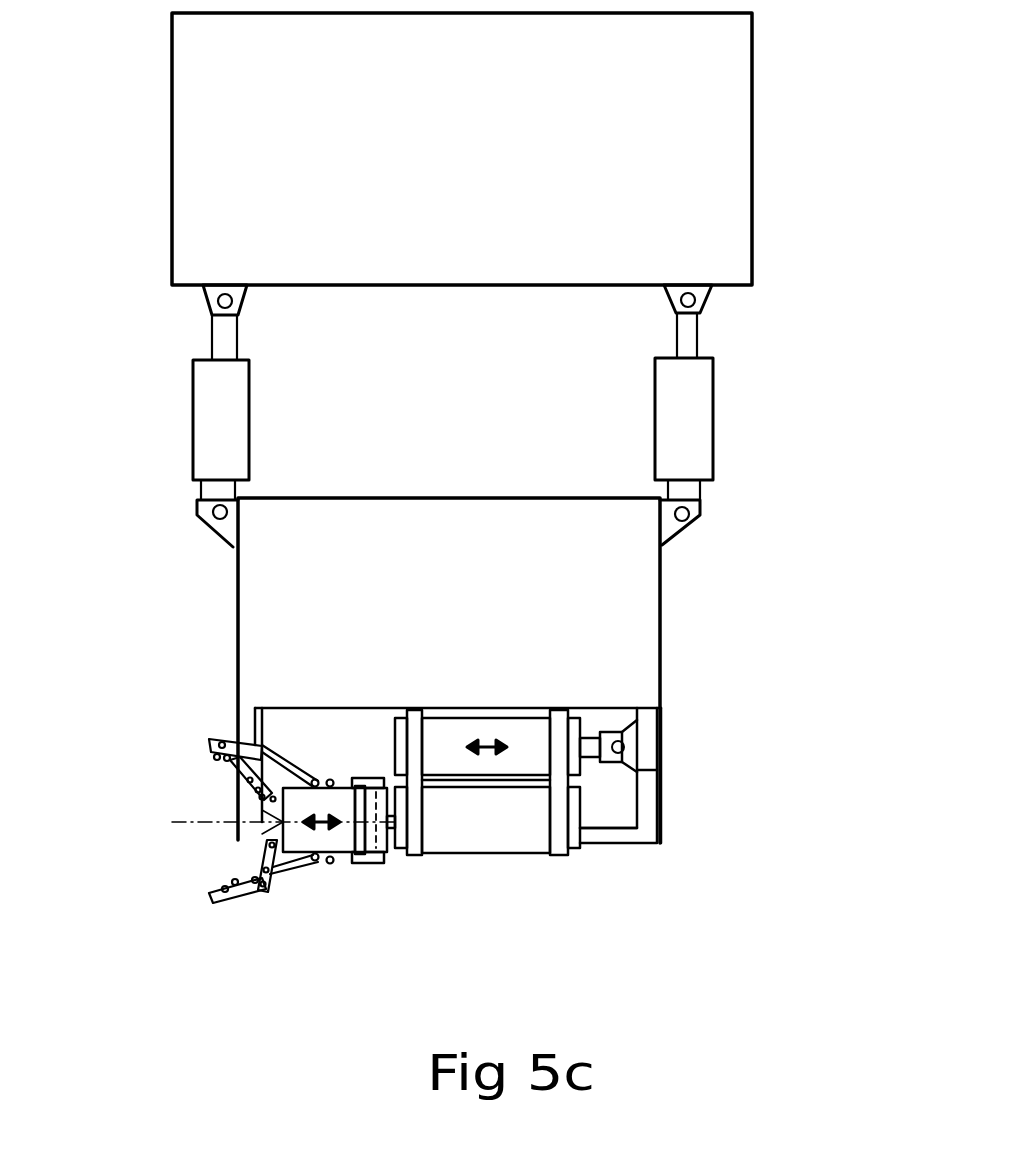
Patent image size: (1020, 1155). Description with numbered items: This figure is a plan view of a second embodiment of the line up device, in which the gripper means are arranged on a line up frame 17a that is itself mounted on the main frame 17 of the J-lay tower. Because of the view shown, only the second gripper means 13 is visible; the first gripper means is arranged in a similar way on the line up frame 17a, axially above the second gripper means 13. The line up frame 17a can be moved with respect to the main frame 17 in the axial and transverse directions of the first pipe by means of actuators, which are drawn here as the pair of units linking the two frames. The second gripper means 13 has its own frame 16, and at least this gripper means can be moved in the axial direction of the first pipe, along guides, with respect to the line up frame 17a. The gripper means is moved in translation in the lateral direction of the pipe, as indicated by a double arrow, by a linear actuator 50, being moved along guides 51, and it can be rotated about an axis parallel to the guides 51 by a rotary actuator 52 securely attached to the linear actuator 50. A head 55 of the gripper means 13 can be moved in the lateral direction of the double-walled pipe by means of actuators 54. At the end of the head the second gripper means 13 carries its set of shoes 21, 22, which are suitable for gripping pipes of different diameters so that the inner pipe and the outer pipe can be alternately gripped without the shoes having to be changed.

The main frame 17 is at (742, 115).
The line up frame 17a is at (637, 595).
The frame 16 is at (650, 810).
The linear actuators 50 is at (527, 745).
The guides 51 is at (622, 833).
The rotary actuators 52 is at (490, 857).
The actuators 54 is at (372, 784).
The head 55 is at (344, 865).
The shoes 21 is at (223, 770).
The shoes 22 is at (250, 795).
The second gripper means 13 is at (260, 940).